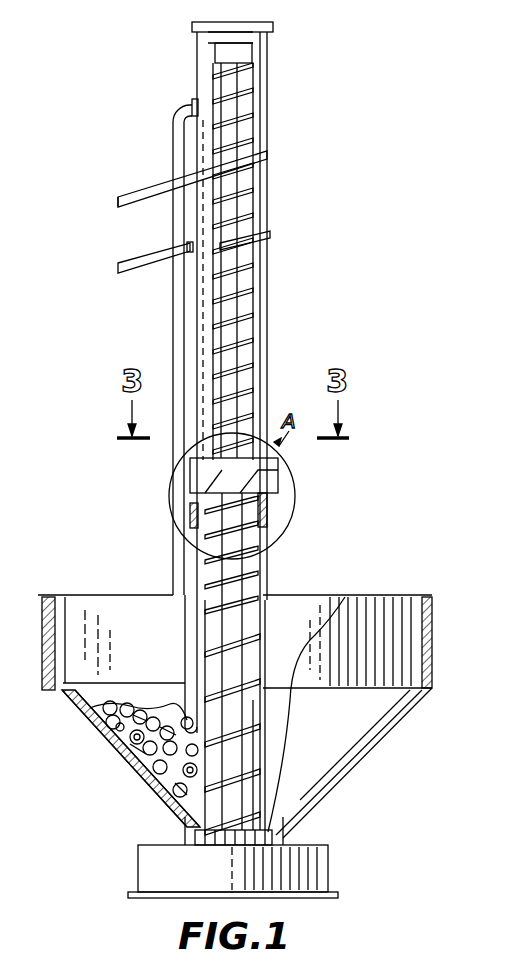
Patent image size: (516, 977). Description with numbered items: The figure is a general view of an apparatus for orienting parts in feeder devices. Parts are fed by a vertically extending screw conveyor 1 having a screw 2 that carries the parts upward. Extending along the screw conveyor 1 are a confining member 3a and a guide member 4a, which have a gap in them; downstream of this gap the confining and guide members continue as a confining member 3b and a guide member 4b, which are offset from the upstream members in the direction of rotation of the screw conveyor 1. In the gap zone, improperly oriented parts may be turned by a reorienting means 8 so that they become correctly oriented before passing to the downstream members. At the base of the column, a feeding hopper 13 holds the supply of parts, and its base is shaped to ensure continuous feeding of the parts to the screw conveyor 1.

The screw conveyor 1 is at (192, 23).
The screw 2 is at (252, 188).
The confining member 3a is at (188, 562).
The confining member 3b is at (270, 311).
The guide member 4a is at (205, 512).
The guide member 4b is at (258, 256).
The reorienting means 8 is at (280, 478).
The feeding hopper 13 is at (348, 615).